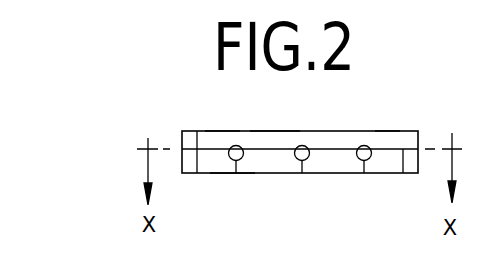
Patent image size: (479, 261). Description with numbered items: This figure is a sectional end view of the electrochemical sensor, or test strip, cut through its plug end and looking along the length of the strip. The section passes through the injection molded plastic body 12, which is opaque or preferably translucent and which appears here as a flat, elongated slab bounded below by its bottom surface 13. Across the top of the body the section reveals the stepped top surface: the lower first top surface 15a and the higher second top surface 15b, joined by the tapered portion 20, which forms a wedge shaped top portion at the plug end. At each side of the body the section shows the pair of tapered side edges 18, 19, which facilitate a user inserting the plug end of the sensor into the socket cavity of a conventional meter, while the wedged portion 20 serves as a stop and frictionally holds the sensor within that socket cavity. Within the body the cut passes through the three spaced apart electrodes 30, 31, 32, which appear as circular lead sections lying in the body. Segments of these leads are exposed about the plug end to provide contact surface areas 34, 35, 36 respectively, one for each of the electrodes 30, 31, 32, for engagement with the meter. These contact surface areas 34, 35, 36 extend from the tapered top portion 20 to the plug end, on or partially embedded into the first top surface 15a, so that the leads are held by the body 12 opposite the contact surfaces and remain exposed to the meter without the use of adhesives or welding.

The body 12 is at (338, 174).
The bottom surface 13 is at (232, 175).
The first top surface 15a is at (208, 138).
The second top surface 15b is at (221, 131).
The tapered side edge 18 is at (188, 174).
The tapered side edge 19 is at (404, 173).
The tapered portion 20 is at (263, 139).
The electrode 30 is at (364, 146).
The electrode 31 is at (303, 146).
The electrode 32 is at (236, 146).
The contact surface area 34 is at (369, 160).
The contact surface area 35 is at (307, 160).
The contact surface area 36 is at (242, 158).